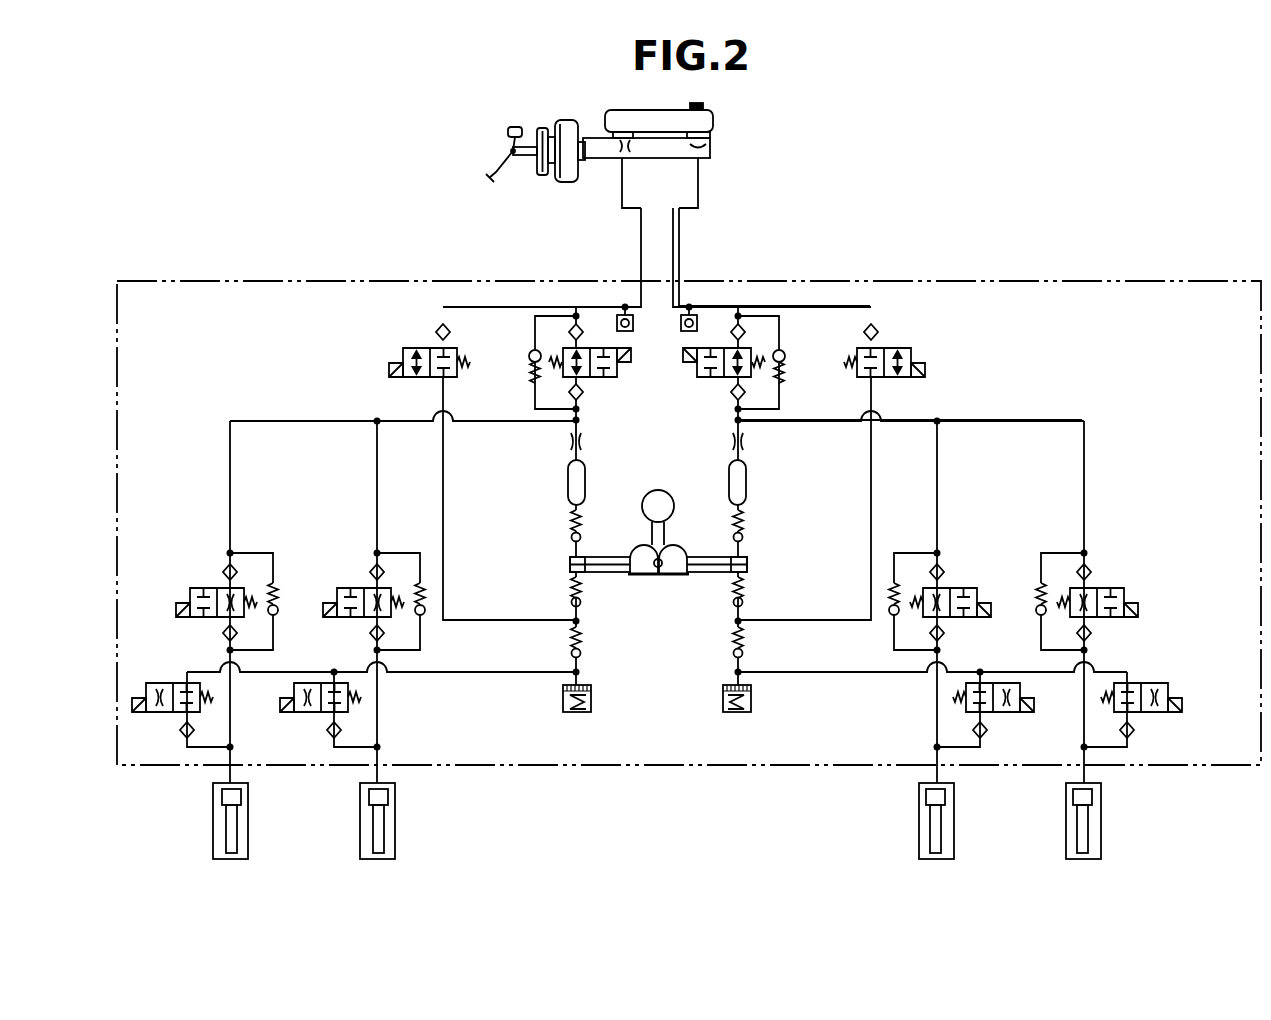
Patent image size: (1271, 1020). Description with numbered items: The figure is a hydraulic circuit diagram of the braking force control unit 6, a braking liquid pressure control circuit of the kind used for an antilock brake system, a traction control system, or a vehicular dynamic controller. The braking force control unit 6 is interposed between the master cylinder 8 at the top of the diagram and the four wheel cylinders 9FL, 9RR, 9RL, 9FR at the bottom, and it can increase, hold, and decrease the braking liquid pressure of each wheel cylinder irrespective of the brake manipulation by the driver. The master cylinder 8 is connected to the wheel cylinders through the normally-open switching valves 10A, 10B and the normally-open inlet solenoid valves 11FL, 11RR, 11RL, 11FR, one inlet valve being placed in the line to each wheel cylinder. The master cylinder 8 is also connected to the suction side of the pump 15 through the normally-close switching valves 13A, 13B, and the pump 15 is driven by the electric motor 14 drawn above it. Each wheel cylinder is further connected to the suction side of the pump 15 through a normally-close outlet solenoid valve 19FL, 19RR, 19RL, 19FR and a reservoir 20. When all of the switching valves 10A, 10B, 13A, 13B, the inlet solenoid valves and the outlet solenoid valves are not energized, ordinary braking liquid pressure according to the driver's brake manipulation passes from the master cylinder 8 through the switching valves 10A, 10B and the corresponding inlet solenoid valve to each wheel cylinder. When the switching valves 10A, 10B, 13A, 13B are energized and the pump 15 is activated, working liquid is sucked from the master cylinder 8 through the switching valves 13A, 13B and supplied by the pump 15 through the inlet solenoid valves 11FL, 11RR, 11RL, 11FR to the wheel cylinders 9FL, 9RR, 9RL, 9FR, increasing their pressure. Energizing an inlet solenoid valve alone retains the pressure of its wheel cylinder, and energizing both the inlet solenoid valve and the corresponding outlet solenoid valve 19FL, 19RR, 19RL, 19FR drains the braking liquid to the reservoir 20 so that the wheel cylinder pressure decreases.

The braking force control unit 6 is at (1065, 281).
The master cylinder 8 is at (712, 150).
The normally-open switching valve 10A is at (598, 348).
The normally-open switching valve 10B is at (707, 348).
The normally-close switching valve 13A is at (408, 348).
The normally-close switching valve 13B is at (903, 348).
The electric motor 14 is at (660, 490).
The pump 15 is at (657, 578).
The reservoir 20 is at (591, 700).
The normally-open inlet solenoid valve 11FL is at (196, 588).
The normally-open inlet solenoid valve 11RR is at (338, 588).
The normally-open inlet solenoid valve 11RL is at (968, 588).
The normally-open inlet solenoid valve 11FR is at (1115, 588).
The normally-close outlet solenoid valve 19FL is at (148, 683).
The normally-close outlet solenoid valve 19RR is at (325, 713).
The normally-close outlet solenoid valve 19RL is at (987, 713).
The normally-close outlet solenoid valve 19FR is at (1158, 683).
The wheel cylinder 9FL is at (248, 848).
The wheel cylinder 9RR is at (395, 848).
The wheel cylinder 9RL is at (954, 848).
The wheel cylinder 9FR is at (1101, 848).